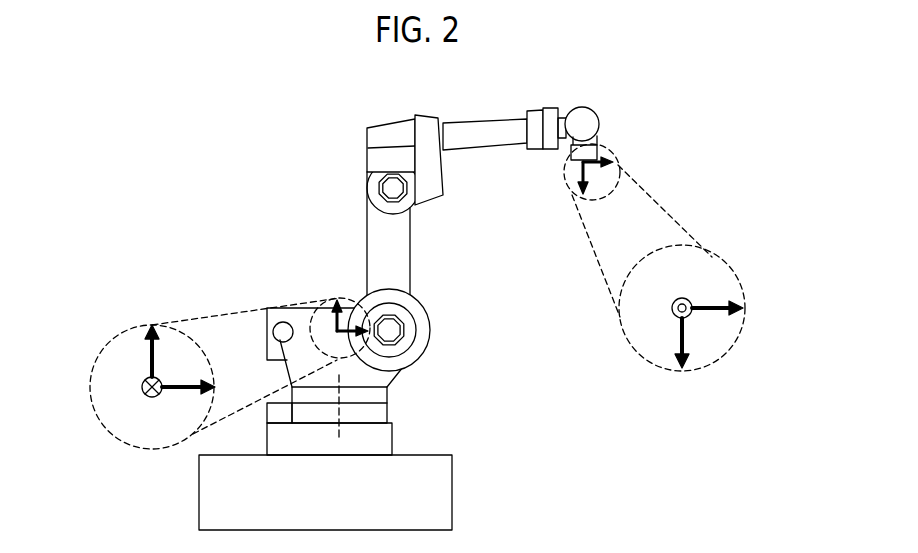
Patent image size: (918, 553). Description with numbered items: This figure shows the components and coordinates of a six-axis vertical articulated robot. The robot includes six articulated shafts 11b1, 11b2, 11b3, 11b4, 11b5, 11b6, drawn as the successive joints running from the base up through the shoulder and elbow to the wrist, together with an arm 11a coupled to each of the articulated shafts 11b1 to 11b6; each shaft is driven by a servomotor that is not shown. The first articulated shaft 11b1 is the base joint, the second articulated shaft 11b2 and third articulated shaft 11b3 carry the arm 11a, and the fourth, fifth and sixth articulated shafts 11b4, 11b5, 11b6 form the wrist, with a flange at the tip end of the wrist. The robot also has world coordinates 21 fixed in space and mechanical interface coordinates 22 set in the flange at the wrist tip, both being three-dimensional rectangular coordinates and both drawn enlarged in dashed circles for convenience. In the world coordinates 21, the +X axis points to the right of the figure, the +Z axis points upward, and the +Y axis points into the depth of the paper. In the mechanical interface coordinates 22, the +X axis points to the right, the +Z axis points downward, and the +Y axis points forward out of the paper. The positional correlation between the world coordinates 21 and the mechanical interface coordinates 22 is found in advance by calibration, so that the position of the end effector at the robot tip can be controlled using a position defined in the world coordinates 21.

The arm 11a is at (477, 138).
The articulated shaft 11b1 is at (352, 399).
The articulated shaft 11b2 is at (429, 331).
The articulated shaft 11b3 is at (358, 186).
The articulated shaft 11b4 is at (533, 144).
The articulated shaft 11b5 is at (571, 146).
The articulated shaft 11b6 is at (611, 148).
The world coordinates 21 is at (322, 317).
The mechanical interface coordinates 22 is at (627, 188).